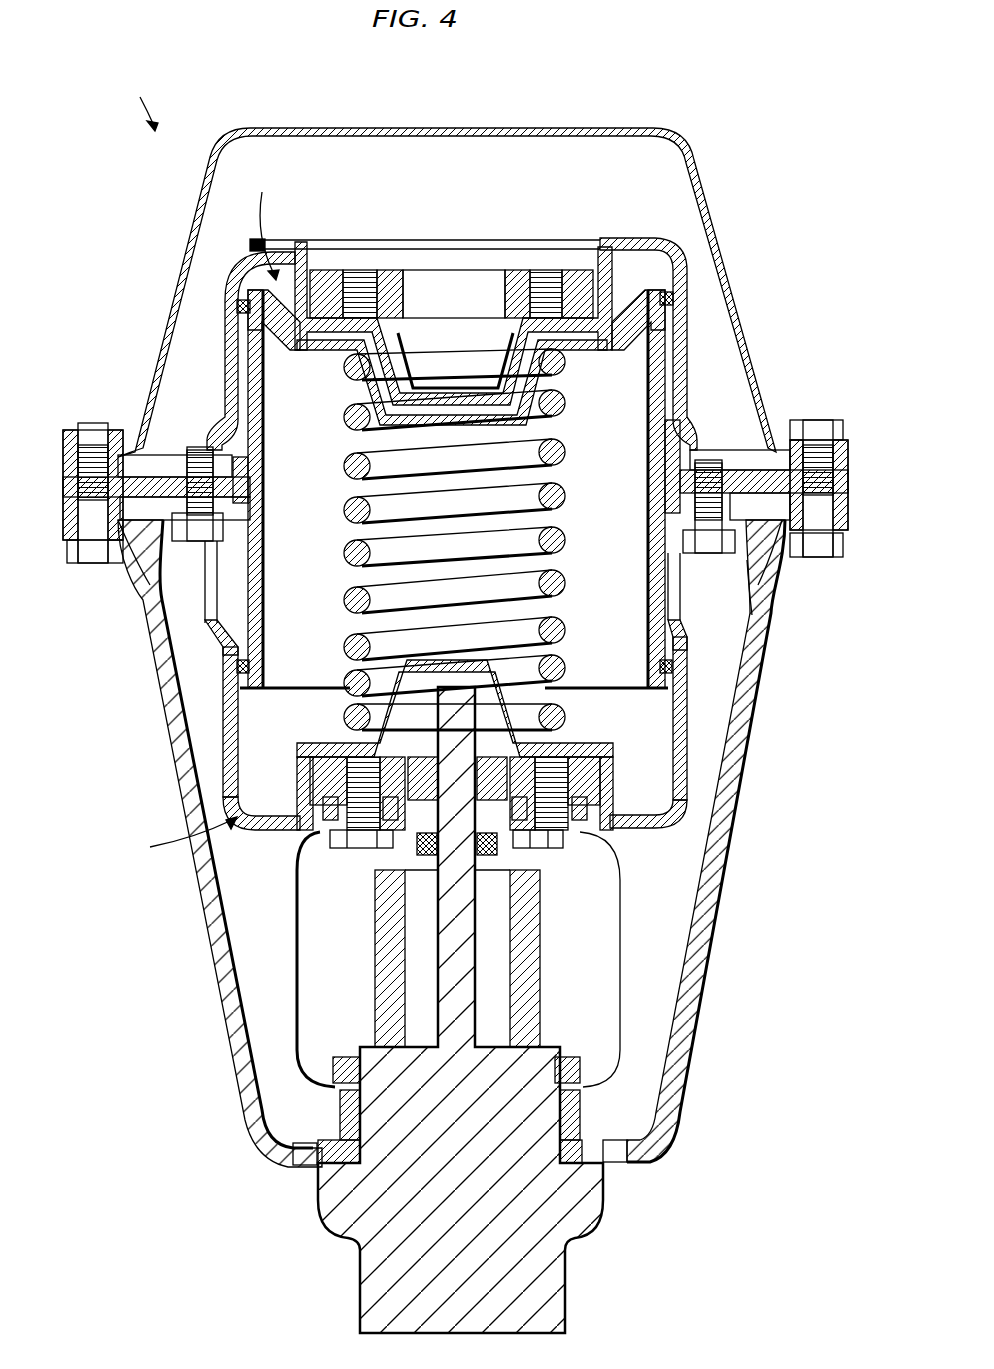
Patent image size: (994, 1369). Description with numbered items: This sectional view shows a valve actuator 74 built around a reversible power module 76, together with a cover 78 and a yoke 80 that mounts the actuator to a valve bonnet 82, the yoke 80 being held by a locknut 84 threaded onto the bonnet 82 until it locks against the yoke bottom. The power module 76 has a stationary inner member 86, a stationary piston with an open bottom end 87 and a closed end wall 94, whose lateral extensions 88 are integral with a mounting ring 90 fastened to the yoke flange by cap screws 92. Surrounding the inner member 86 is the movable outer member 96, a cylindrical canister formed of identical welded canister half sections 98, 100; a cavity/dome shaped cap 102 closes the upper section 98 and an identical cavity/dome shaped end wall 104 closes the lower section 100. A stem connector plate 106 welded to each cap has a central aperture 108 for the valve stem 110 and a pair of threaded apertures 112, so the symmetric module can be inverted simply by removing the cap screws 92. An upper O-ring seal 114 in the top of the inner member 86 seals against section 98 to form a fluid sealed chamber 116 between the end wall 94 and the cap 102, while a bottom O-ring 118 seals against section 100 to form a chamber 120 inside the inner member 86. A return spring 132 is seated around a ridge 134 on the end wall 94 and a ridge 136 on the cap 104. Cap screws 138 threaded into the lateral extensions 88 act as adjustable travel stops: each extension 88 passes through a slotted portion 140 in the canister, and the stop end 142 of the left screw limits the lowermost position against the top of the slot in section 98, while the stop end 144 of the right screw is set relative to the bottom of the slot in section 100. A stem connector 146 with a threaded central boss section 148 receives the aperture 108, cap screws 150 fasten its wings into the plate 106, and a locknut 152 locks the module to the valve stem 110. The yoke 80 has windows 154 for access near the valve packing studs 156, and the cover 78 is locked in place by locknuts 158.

The valve actuator 74 is at (142, 99).
The power module 76 is at (177, 838).
The cover 78 is at (370, 128).
The yoke 80 is at (227, 1037).
The valve bonnet 82 is at (592, 1188).
The locknut 84 is at (343, 1058).
The stationary inner member 86 is at (262, 432).
The open bottom end 87 is at (294, 668).
The lateral extensions 88 is at (167, 486).
The mounting ring 90 is at (62, 507).
The cap screws 92 is at (95, 422).
The end wall 94 is at (540, 455).
The movable outer member 96 is at (228, 265).
The canister half section 98 is at (222, 337).
The canister half section 100 is at (238, 720).
The cavity/dome shaped cap 102 is at (352, 240).
The cavity/dome shaped end wall 104 is at (420, 655).
The stem connector plate 106 is at (578, 275).
The central aperture 108 is at (457, 275).
The valve stem 110 is at (540, 650).
The threaded apertures 112 is at (347, 272).
The upper O-ring seal 114 is at (685, 300).
The fluid sealed chamber 116 is at (263, 222).
The bottom O-ring 118 is at (237, 670).
The chamber 120 is at (604, 576).
The return spring 132 is at (560, 366).
The ridge 134 is at (545, 407).
The ridge 136 is at (523, 705).
The cap screws 138 is at (148, 565).
The slotted portion 140 is at (211, 570).
The stop end 142 is at (197, 447).
The stop end 144 is at (757, 625).
The stem connector 146 is at (623, 832).
The threaded central boss section 148 is at (500, 850).
The cap screws 150 is at (318, 845).
The locknut 152 is at (372, 882).
The windows 154 is at (620, 898).
The valve packing studs 156 is at (387, 927).
The locknuts 158 is at (63, 438).